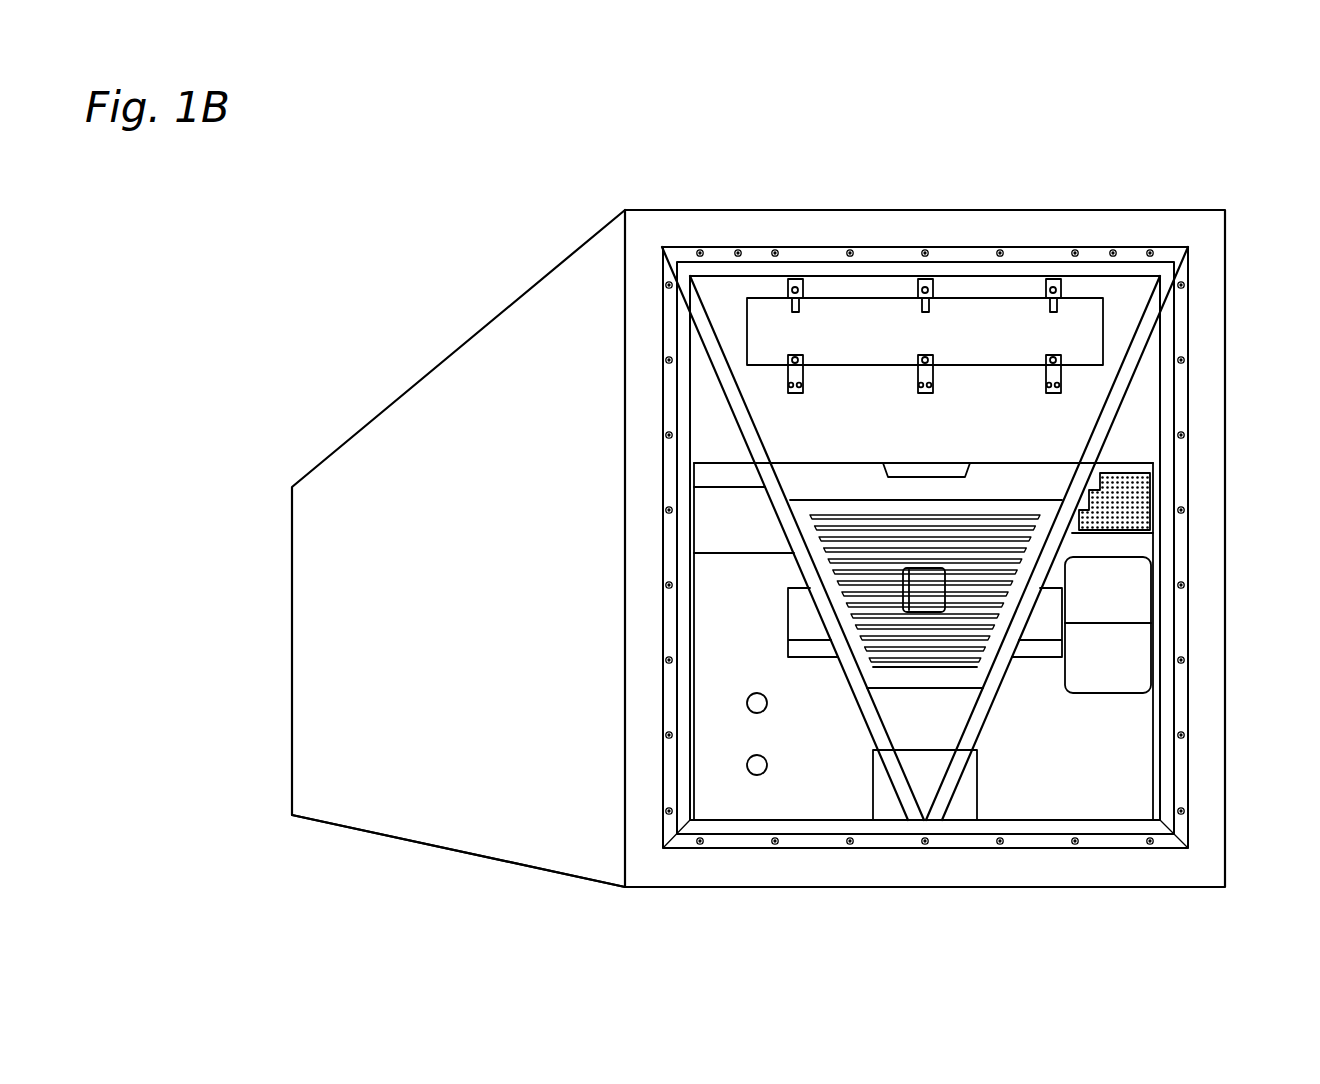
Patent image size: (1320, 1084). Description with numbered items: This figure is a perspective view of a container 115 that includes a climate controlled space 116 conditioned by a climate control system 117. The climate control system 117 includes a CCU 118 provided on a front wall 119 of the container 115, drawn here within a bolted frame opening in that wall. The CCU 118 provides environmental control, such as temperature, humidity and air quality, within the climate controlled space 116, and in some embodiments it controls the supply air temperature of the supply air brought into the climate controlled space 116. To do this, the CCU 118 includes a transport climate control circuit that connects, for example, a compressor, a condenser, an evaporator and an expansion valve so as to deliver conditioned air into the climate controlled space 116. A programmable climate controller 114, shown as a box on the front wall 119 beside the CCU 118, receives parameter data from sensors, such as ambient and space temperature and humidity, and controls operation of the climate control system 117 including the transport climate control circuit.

The programmable climate controller 114 is at (1140, 656).
The container 115 is at (427, 351).
The climate controlled space 116 is at (485, 783).
The climate control system 117 is at (1146, 176).
The CCU 118 is at (1076, 423).
The front wall 119 is at (1183, 230).